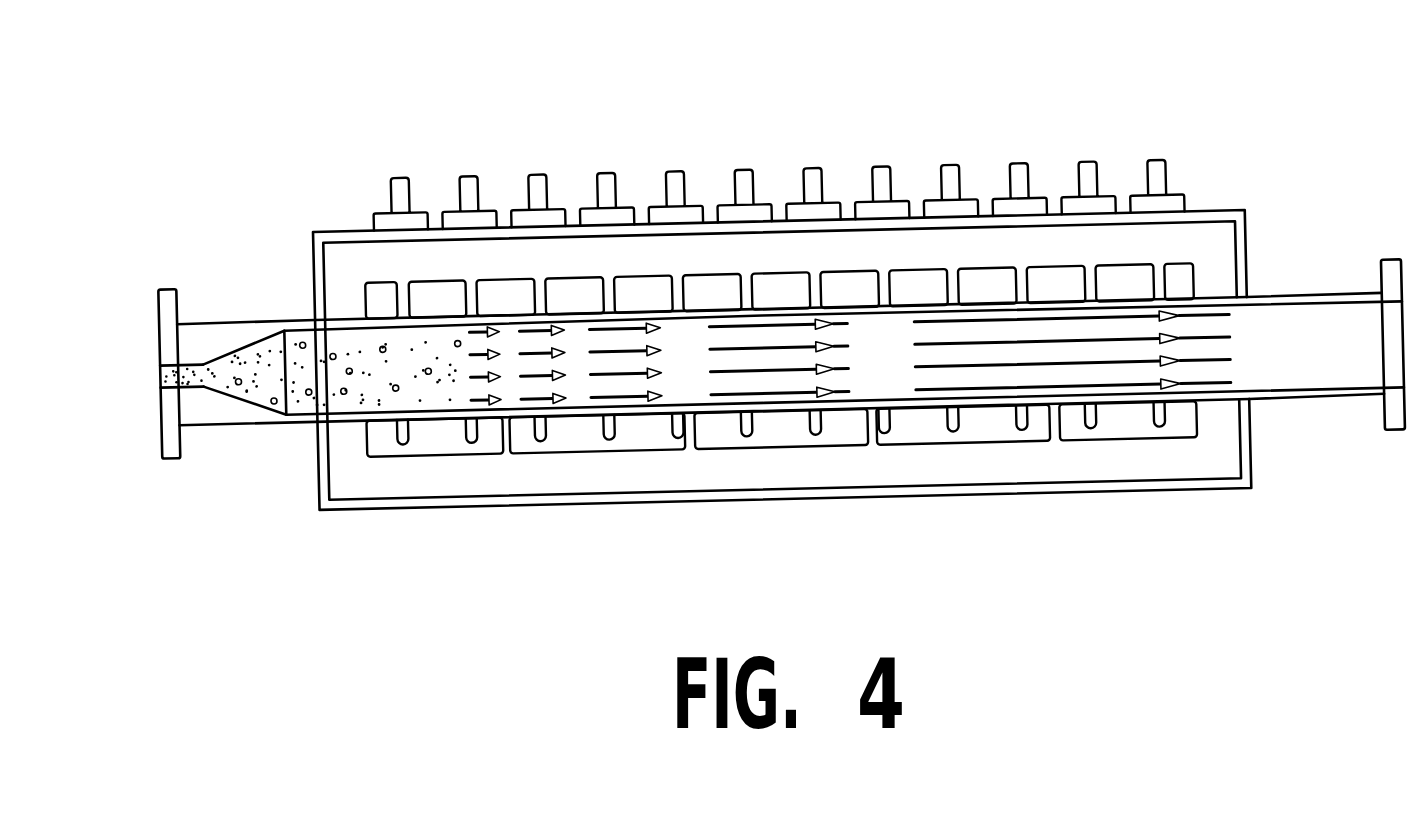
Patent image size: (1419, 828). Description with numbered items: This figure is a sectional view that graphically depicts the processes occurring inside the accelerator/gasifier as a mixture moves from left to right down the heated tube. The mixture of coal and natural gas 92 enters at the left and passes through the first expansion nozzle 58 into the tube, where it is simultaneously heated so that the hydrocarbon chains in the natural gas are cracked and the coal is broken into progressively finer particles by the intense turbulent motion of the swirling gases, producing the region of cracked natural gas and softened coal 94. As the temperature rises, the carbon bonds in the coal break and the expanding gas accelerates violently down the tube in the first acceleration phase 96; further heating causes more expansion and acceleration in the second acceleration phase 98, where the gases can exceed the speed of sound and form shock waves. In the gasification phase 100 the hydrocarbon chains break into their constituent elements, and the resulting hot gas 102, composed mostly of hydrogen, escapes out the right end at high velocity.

The first expansion nozzle 58 is at (252, 342).
The coal and natural gas 92 is at (187, 383).
The cracked natural gas and softened coal 94 is at (350, 380).
The first acceleration phase 96 is at (455, 372).
The second acceleration phase 98 is at (594, 363).
The gasification phase 100 is at (925, 350).
The hot gas 102 is at (1367, 317).